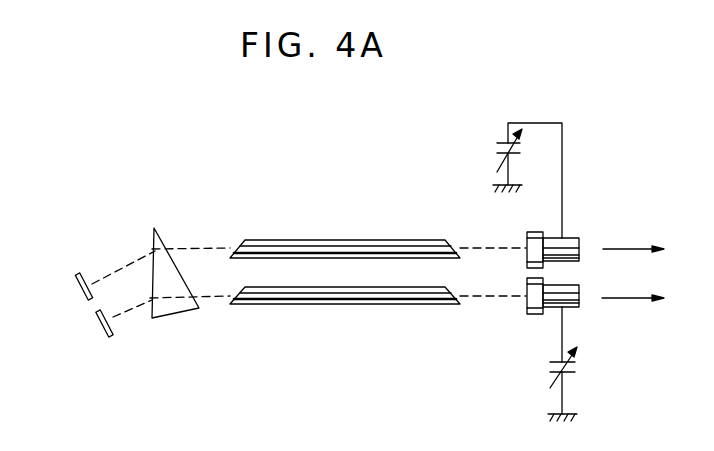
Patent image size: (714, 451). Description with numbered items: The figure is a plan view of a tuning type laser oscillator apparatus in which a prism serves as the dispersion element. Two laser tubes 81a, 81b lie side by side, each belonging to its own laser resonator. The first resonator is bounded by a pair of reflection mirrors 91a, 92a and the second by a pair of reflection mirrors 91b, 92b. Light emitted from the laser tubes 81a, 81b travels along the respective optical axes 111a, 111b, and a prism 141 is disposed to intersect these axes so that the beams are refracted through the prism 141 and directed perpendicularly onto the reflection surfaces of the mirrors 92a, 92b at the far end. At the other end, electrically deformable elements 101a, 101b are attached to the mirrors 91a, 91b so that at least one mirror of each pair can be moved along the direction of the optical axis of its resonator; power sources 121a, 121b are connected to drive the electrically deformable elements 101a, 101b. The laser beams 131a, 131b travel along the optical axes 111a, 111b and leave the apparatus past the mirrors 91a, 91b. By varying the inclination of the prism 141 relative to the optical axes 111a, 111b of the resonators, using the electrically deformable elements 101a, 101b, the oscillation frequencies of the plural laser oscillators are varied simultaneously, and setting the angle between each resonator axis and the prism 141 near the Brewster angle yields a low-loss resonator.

The prism 141 is at (154, 240).
The optical axis 111a is at (198, 247).
The optical axis 111b is at (214, 300).
The resonator mirror 92a is at (75, 278).
The resonator mirror 92b is at (100, 330).
The laser tube 81a is at (327, 240).
The laser tube 81b is at (318, 304).
The resonator mirror 91a is at (527, 240).
The resonator mirror 91b is at (528, 303).
The electrically deformable element 101a is at (567, 238).
The electrically deformable element 101b is at (570, 307).
The power source 121a is at (493, 149).
The power source 121b is at (550, 367).
The laser beam 131a is at (620, 229).
The laser beam 131b is at (637, 299).